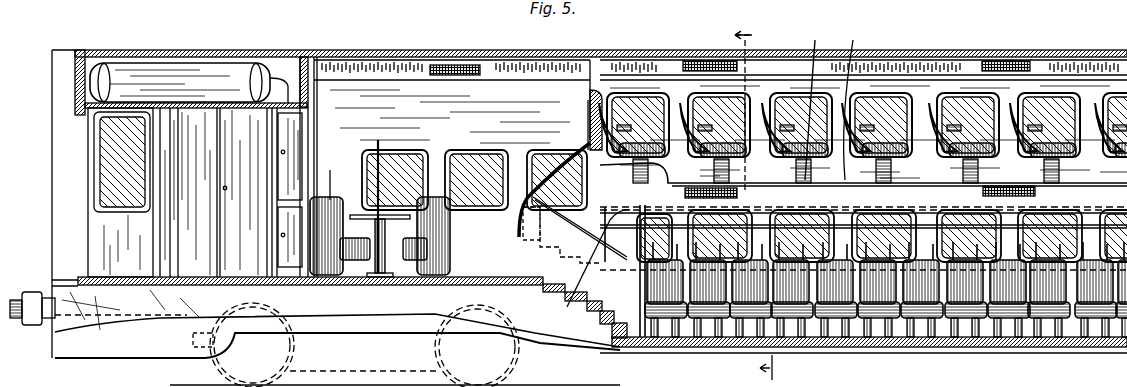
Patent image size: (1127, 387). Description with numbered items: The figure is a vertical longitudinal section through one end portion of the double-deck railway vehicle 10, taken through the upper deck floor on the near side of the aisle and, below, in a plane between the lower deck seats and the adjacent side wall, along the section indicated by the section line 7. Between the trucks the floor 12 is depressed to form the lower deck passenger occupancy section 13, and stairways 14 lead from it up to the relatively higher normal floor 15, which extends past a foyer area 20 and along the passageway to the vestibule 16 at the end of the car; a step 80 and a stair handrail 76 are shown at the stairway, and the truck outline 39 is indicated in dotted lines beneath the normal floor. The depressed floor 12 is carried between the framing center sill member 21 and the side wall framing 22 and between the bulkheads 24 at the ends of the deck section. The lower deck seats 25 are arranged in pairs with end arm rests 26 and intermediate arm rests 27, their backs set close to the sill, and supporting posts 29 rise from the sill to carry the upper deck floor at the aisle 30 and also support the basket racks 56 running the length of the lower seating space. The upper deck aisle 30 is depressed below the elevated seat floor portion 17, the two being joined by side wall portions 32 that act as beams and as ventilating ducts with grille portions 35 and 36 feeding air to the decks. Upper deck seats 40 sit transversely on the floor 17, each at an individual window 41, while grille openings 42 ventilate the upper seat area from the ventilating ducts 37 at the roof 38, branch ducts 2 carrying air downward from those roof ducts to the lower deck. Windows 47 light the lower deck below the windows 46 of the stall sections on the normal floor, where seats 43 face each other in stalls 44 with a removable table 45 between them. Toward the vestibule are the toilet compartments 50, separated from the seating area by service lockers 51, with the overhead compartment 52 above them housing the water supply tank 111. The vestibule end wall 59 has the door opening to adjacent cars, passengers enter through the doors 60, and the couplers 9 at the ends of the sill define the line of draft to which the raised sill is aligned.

The branch duct 2 is at (590, 88).
The section line 7 is at (747, 199).
The coupler 9 is at (30, 292).
The vehicle 10 is at (135, 50).
The floor 12 is at (337, 337).
The lower deck passenger occupancy section 13 is at (813, 335).
The stairway 14 is at (602, 312).
The normal floor 15 is at (248, 277).
The vestibule 16 is at (135, 277).
The elevated floor portion 17 is at (815, 99).
The foyer area 20 is at (625, 240).
The framing center sill member 21 is at (545, 320).
The side wall framing 22 is at (842, 250).
The bulkhead 24 is at (588, 125).
The lower deck seat 25 is at (928, 255).
The end arm rest 26 is at (1059, 110).
The intermediate arm rest 27 is at (890, 260).
The supporting post 29 is at (812, 250).
The upper deck aisle 30 is at (755, 150).
The side wall portion 32 is at (852, 98).
The grille portion 35 is at (685, 192).
The grille portion 36 is at (1030, 130).
The ventilating duct 37 is at (412, 72).
The roof 38 is at (380, 50).
The truck 39 is at (501, 346).
The upper deck seat 40 is at (628, 145).
The window 41 is at (652, 140).
The grille opening 42 is at (700, 60).
The seat 43 is at (383, 275).
The stall 44 is at (333, 195).
The removable table 45 is at (377, 192).
The window 46 is at (425, 148).
The window 47 is at (455, 65).
The toilet compartment 50 is at (235, 120).
The service locker 51 is at (310, 170).
The overhead compartment 52 is at (285, 62).
The basket rack 56 is at (1055, 262).
The vestibule end wall 59 is at (75, 88).
The door 60 is at (105, 228).
The stair handrail 76 is at (575, 205).
The floor step 80 is at (480, 277).
The water supply tank 111 is at (168, 70).